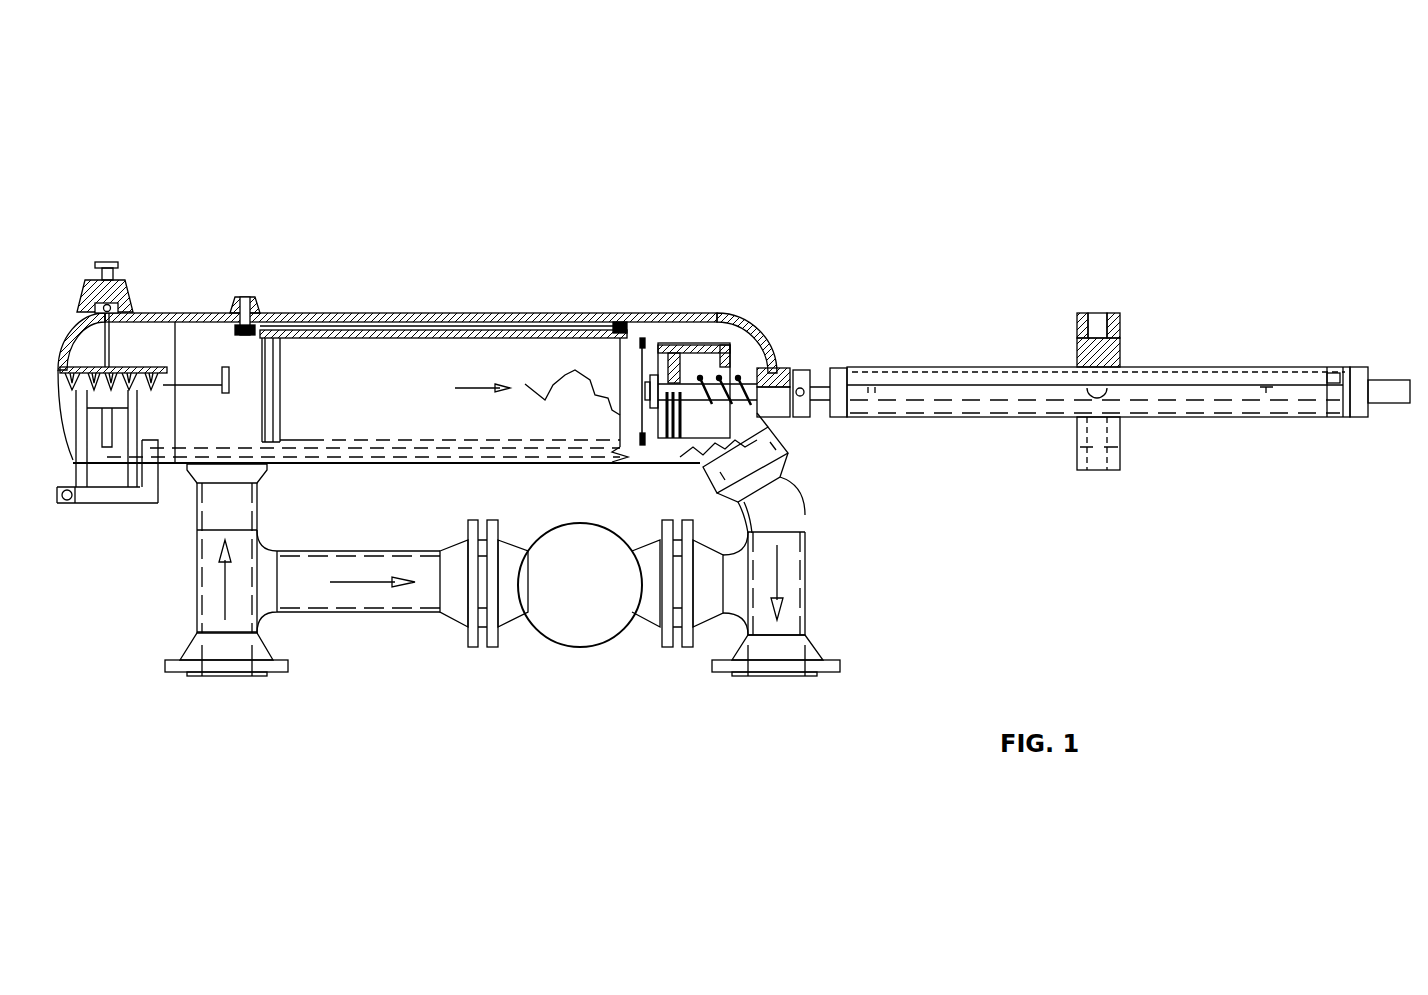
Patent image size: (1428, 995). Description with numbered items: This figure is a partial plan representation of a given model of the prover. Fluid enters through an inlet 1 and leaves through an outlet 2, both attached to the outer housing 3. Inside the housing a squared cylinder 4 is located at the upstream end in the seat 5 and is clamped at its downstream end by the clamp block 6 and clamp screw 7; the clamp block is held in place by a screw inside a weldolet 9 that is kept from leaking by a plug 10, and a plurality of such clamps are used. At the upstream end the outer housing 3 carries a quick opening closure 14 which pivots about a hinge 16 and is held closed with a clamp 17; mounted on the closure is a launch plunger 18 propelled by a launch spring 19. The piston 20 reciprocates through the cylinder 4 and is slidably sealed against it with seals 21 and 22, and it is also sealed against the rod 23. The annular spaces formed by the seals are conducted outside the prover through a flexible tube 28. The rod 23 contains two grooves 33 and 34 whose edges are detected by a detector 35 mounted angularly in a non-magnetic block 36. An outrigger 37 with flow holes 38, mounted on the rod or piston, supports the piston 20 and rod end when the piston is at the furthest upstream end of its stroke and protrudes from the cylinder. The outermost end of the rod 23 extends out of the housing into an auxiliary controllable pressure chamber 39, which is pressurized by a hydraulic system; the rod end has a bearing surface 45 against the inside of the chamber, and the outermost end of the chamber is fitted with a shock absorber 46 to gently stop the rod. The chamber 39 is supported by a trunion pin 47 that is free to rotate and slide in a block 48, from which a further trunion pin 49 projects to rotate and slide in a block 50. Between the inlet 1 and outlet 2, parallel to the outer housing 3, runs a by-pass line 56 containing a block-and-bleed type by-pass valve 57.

The inlet 1 is at (217, 678).
The outlet 2 is at (777, 678).
The outer housing 3 is at (577, 313).
The cylinder 4 is at (477, 330).
The seat 5 is at (650, 335).
The clamp block 6 is at (297, 320).
The clamp screw 7 is at (236, 332).
The weldolet 9 is at (280, 318).
The plug 10 is at (252, 303).
The quick opening closure 14 is at (81, 297).
The hinge 16 is at (60, 503).
The clamp 17 is at (80, 313).
The launch plunger 18 is at (228, 375).
The launch spring 19 is at (150, 370).
The piston 20 is at (627, 357).
The seal 21 is at (672, 345).
The seal 22 is at (678, 355).
The rod 23 is at (817, 387).
The flexible tube 28 is at (742, 395).
The groove 33 is at (870, 387).
The groove 34 is at (1277, 387).
The detector 35 is at (805, 417).
The non-magnetic block 36 is at (800, 418).
The outrigger 37 is at (745, 368).
The flow holes 38 is at (707, 432).
The auxiliary controllable pressure chamber 39 is at (1208, 417).
The bearing surface 45 is at (1337, 367).
The shock absorber 46 is at (1392, 378).
The trunion pin 47 is at (1123, 405).
The block 48 is at (1122, 353).
The trunion pin 49 is at (1094, 313).
The block 50 is at (1078, 327).
The by-pass line 56 is at (373, 615).
The by-pass valve 57 is at (577, 648).